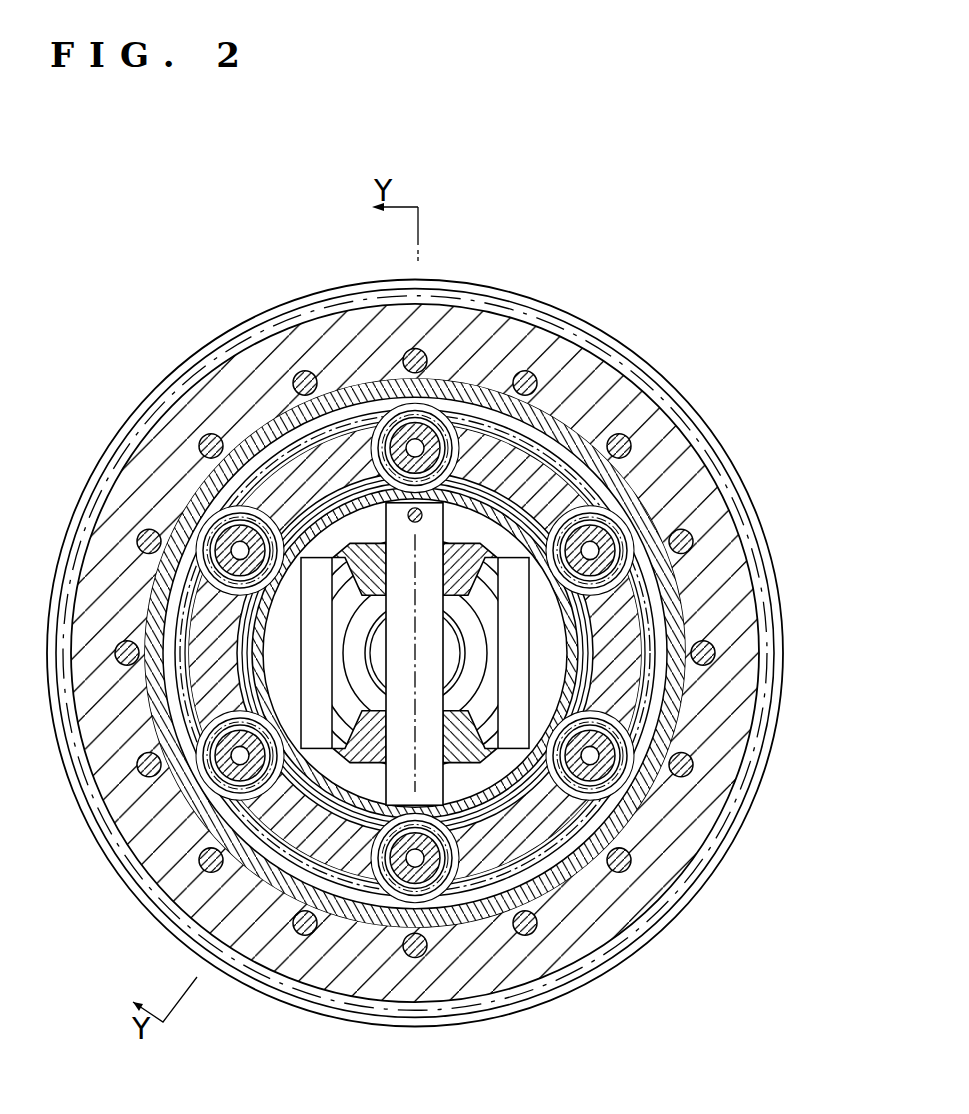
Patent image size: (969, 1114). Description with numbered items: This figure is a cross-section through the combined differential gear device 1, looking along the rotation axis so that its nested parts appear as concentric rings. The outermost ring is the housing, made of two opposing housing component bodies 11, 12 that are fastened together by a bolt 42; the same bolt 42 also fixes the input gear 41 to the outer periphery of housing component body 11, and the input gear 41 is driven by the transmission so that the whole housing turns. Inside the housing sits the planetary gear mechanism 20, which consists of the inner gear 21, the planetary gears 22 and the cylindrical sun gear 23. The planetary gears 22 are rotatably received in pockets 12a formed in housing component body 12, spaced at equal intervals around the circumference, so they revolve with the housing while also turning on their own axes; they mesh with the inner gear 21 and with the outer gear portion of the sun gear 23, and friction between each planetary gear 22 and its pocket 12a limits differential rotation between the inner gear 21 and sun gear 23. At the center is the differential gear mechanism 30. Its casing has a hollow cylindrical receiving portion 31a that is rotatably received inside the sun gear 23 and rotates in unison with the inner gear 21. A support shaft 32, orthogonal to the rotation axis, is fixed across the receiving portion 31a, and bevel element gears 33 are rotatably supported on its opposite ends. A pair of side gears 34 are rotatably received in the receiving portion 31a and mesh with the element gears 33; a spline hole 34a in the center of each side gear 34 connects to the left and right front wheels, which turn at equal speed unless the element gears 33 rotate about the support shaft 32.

The combined differential gear device 1 is at (517, 210).
The housing component body 11 is at (265, 433).
The housing component body 12 is at (598, 383).
The pocket 12a is at (505, 400).
The planetary gear mechanism 20 is at (183, 795).
The inner gear 21 is at (362, 520).
The planetary gear 22 is at (436, 420).
The sun gear 23 is at (495, 684).
The differential gear mechanism 30 is at (517, 777).
The receiving portion 31a is at (525, 800).
The support shaft 32 is at (378, 787).
The element gear 33 is at (360, 437).
The side gear 34 is at (573, 680).
The spline hole 34a is at (453, 647).
The input gear 41 is at (713, 433).
The bolt 42 is at (531, 379).